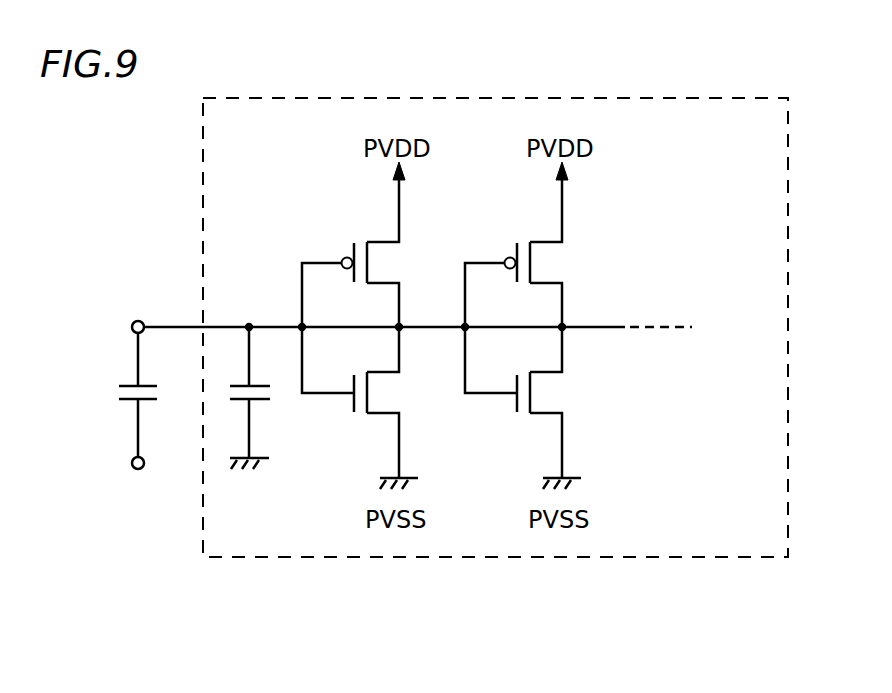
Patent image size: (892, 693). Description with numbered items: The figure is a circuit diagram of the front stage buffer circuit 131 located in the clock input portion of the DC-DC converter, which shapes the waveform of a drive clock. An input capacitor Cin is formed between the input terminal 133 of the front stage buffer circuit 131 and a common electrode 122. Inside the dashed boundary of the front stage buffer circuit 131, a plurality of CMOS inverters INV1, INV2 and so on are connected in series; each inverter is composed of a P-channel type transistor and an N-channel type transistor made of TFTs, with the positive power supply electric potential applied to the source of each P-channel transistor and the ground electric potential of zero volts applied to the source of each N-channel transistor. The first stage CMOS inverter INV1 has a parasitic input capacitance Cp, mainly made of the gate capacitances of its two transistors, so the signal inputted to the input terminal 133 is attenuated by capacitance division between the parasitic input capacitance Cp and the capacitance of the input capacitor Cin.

The input terminal 133 is at (128, 324).
The common electrode 122 is at (128, 460).
The front stage buffer circuit 131 is at (783, 469).
The input capacitor Cin is at (114, 391).
The parasitic input capacitance Cp is at (277, 393).
The first stage CMOS inverter INV1 is at (423, 242).
The CMOS inverter INV2 is at (580, 242).